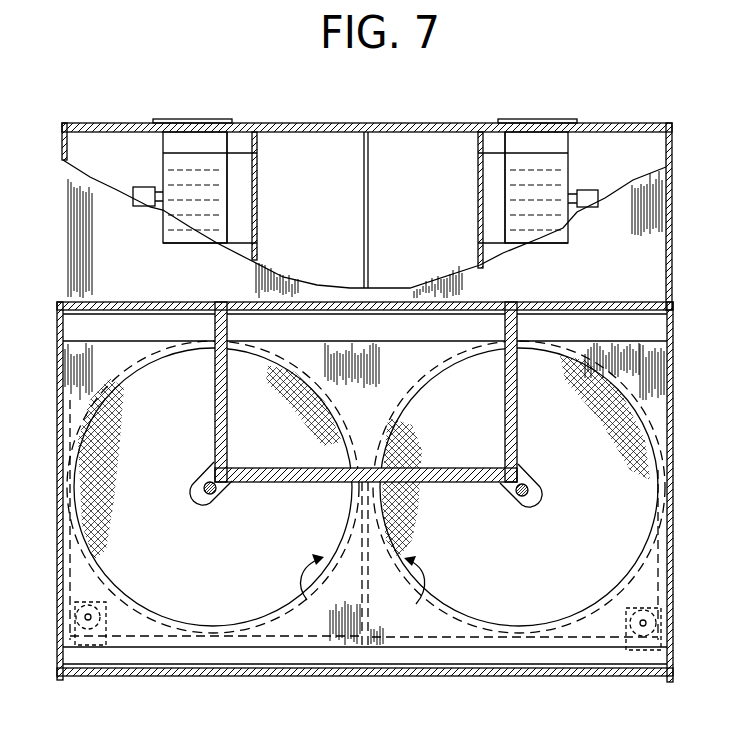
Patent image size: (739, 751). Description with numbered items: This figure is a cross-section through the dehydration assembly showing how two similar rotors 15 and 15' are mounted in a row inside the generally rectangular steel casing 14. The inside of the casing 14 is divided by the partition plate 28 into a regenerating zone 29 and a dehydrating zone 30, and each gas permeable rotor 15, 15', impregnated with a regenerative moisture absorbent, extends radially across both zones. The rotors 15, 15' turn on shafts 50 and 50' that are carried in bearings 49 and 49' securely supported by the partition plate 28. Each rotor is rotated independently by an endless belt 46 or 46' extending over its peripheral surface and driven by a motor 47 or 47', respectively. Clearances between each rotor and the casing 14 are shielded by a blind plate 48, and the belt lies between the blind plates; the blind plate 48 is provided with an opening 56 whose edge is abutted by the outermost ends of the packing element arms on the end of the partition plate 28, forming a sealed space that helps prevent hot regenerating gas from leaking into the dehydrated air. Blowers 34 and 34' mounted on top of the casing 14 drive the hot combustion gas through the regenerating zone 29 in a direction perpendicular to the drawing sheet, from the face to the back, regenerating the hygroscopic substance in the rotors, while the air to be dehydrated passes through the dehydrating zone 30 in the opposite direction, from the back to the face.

The casing 14 is at (675, 554).
The rotor 15 is at (176, 462).
The rotor 15' is at (557, 456).
The partition plate 28 is at (218, 394).
The regenerating zone 29 is at (282, 435).
The dehydrating zone 30 is at (218, 567).
The blower 34 is at (178, 196).
The blower 34' is at (559, 200).
The endless belt 46 is at (186, 520).
The endless belt 46' is at (553, 555).
The motor 47 is at (57, 630).
The motor 47' is at (680, 631).
The blind plate 48 is at (306, 622).
The bearing 49 is at (226, 503).
The bearing 49' is at (556, 485).
The shaft 50 is at (242, 500).
The shaft 50' is at (551, 467).
The opening 56 is at (312, 596).